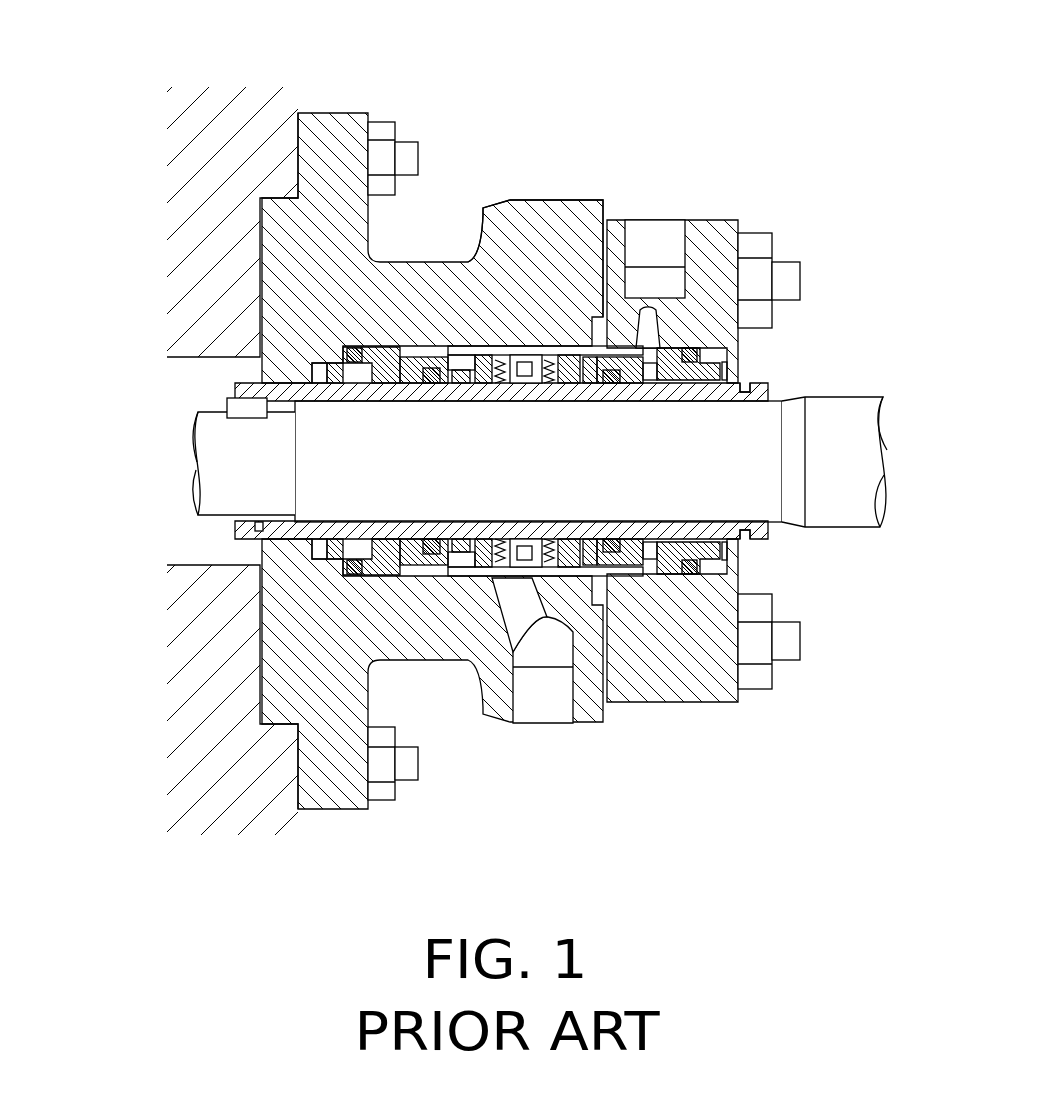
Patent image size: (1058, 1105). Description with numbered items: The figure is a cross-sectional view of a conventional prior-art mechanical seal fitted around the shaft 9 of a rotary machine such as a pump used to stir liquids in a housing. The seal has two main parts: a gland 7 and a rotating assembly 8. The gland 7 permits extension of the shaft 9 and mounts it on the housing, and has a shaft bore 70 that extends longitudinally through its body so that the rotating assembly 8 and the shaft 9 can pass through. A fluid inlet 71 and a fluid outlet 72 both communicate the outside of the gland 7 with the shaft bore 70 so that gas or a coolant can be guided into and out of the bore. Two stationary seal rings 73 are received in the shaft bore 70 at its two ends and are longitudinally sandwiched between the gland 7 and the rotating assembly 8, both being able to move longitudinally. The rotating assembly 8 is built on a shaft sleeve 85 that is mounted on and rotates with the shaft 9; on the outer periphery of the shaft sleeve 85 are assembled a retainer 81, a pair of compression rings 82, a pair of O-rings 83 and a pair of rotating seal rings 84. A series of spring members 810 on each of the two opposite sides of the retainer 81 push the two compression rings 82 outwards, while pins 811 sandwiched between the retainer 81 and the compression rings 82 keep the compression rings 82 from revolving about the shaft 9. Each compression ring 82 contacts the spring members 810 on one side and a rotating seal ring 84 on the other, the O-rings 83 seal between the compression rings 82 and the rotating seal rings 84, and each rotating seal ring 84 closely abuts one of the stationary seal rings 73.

The gland 7 is at (436, 735).
The shaft bore 70 is at (748, 378).
The fluid inlet 71 is at (655, 235).
The fluid outlet 72 is at (548, 705).
The stationary seal ring 73 is at (308, 358).
The rotating assembly 8 is at (228, 525).
The retainer 81 is at (527, 356).
The spring member 810 is at (545, 340).
The pin 811 is at (575, 678).
The compression ring 82 is at (482, 350).
The O-ring 83 is at (433, 372).
The rotating seal ring 84 is at (404, 356).
The shaft sleeve 85 is at (238, 380).
The shaft 9 is at (860, 513).